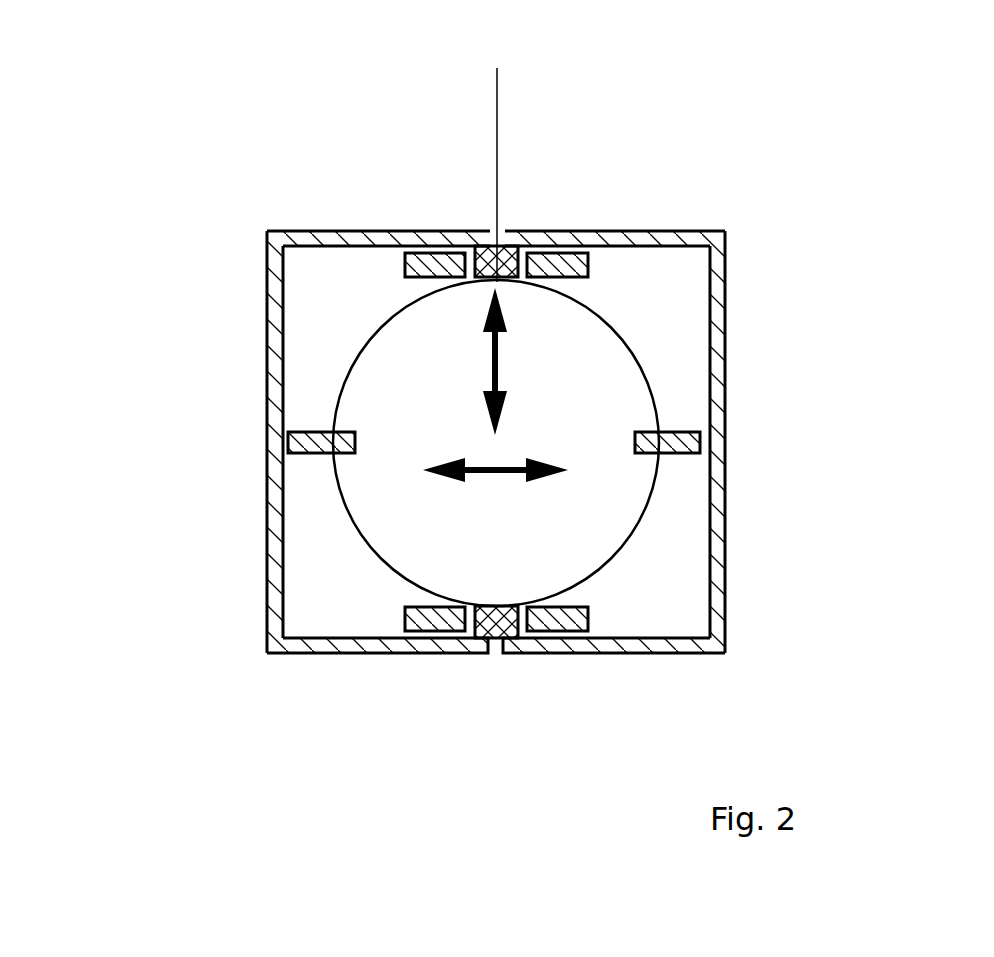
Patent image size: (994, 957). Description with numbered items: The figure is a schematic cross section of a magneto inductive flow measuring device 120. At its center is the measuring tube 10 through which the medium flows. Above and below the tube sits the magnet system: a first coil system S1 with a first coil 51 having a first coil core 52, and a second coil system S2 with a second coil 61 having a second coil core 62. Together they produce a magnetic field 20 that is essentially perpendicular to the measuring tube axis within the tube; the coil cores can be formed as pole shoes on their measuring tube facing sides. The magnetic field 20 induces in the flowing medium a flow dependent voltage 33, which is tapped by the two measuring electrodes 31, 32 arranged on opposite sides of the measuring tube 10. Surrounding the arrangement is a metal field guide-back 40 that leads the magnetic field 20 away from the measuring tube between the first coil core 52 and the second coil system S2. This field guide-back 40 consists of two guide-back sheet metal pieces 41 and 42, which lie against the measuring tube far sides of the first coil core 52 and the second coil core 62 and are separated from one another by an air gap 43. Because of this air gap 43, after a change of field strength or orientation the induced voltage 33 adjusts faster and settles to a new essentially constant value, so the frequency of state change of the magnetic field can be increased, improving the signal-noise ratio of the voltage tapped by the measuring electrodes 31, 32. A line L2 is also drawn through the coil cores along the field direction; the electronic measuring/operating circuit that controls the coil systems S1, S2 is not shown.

The magneto inductive flow measuring device 120 is at (203, 265).
The measuring tube 10 is at (645, 370).
The magnetic field 20 is at (523, 361).
The flow dependent voltage 33 is at (495, 492).
The measuring electrode 31 is at (317, 463).
The measuring electrode 32 is at (675, 463).
The field guide-back 40 is at (247, 627).
The guide-back sheet metal piece 41 is at (268, 499).
The guide-back sheet metal piece 42 is at (718, 500).
The air gap 43 is at (500, 228).
The first coil 51 is at (398, 243).
The first coil core 52 is at (510, 255).
The second coil 61 is at (427, 617).
The second coil core 62 is at (503, 652).
The first coil system S1 is at (478, 248).
The second coil system S2 is at (470, 615).
The second axis line L2 is at (496, 157).